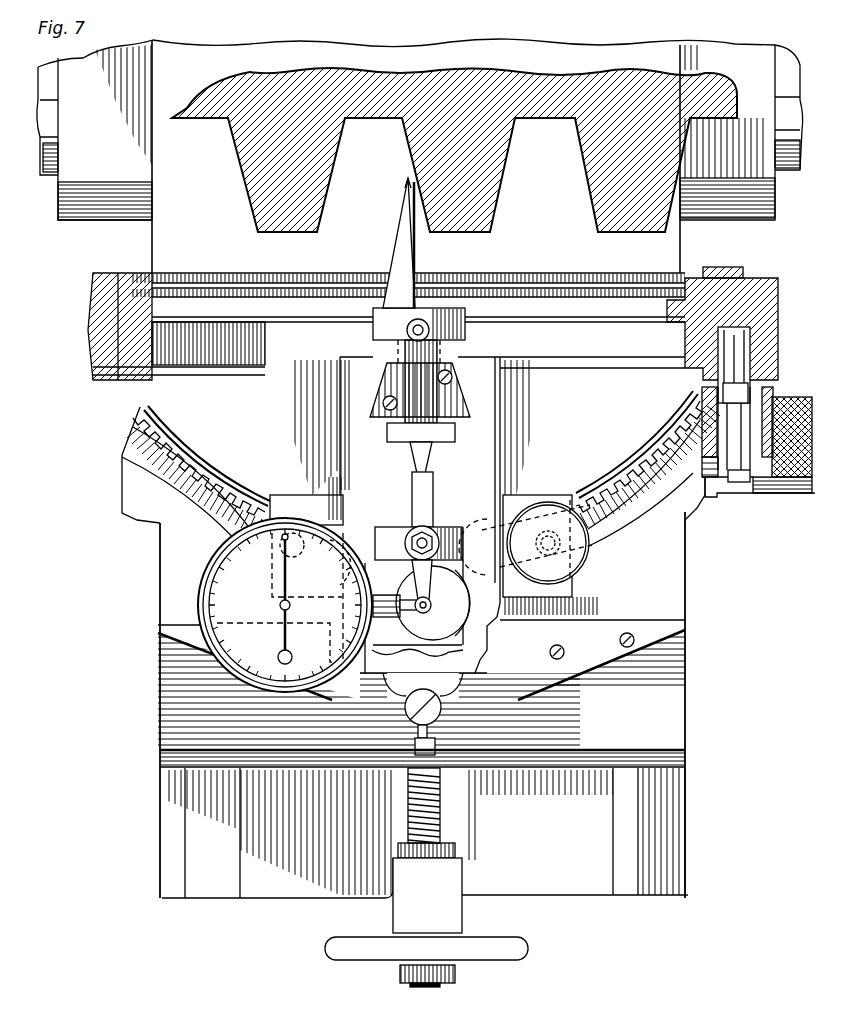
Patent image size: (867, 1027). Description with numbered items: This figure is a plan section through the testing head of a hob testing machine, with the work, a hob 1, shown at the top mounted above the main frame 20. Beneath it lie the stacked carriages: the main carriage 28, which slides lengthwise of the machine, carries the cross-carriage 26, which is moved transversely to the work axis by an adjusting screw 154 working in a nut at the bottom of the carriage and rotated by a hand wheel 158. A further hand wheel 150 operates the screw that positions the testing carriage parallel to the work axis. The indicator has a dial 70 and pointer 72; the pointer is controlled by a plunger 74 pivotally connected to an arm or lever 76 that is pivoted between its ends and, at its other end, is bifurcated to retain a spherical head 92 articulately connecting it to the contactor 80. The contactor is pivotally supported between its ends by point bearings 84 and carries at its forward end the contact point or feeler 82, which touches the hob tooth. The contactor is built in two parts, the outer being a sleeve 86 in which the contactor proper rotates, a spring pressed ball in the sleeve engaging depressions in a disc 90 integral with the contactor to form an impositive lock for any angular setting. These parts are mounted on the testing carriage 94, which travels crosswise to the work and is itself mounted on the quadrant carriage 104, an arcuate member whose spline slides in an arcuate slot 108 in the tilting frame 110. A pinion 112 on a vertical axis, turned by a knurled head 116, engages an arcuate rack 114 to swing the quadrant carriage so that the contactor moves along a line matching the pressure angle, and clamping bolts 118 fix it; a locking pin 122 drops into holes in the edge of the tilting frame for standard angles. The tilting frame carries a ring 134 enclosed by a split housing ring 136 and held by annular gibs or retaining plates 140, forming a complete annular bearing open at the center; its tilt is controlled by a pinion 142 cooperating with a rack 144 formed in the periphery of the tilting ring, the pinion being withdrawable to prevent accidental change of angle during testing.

The hob 1 is at (508, 137).
The main frame 20 is at (52, 172).
The main carriage 28 is at (82, 205).
The cross-carriage 26 is at (680, 760).
The dial 70 is at (220, 592).
The pointer 72 is at (276, 570).
The plunger 74 is at (387, 597).
The arm or lever 76 is at (427, 512).
The contactor 80 is at (410, 460).
The contact point or feeler 82 is at (408, 177).
The point bearings 84 is at (393, 263).
The sleeve 86 is at (420, 385).
The disc 90 is at (445, 318).
The spherical head 92 is at (417, 480).
The testing carriage 94 is at (483, 438).
The quadrant carriage 104 is at (287, 503).
The arcuate slot 108 is at (224, 488).
The tilting frame 110 is at (683, 572).
The pinion 112 is at (592, 565).
The arcuate rack 114 is at (157, 453).
The knurled head 116 is at (590, 547).
The clamping bolts 118 is at (335, 524).
The locking pin 122 is at (437, 744).
The ring 134 is at (145, 300).
The housing ring 136 is at (97, 320).
The annular gibs or retaining plates 140 is at (135, 275).
The pinion 142 is at (750, 340).
The rack 144 is at (712, 360).
The hand wheel 150 is at (788, 497).
The adjusting screw 154 is at (440, 798).
The hand wheel 158 is at (515, 946).